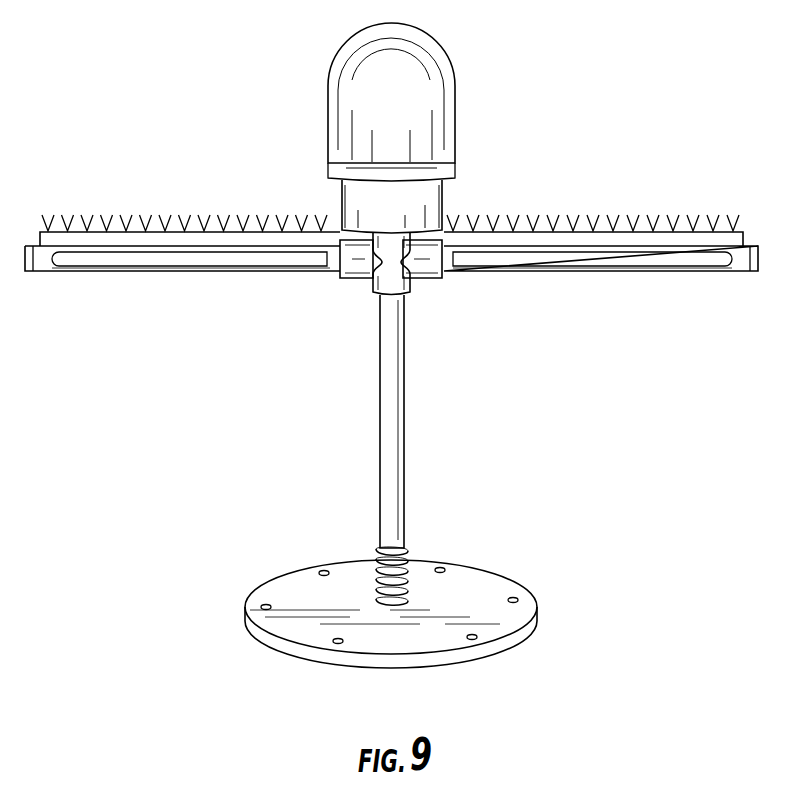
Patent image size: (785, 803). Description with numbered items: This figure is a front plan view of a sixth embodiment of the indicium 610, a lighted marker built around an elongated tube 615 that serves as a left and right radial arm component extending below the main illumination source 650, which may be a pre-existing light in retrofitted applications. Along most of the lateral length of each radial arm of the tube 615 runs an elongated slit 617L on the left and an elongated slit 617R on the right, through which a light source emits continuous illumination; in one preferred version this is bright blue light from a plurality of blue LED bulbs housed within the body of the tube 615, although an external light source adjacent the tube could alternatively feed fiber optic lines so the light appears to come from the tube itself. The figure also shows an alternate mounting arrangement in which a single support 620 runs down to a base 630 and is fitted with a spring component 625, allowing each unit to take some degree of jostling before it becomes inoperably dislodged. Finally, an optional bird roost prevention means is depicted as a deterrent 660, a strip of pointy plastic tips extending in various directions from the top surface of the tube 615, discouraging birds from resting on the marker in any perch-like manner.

The indicium 610 is at (242, 57).
The illumination source 650 is at (342, 192).
The deterrent 660 is at (178, 219).
The elongated tube 615 is at (138, 272).
The elongated slit 617L is at (186, 258).
The elongated slit 617R is at (634, 258).
The support 620 is at (380, 473).
The spring component 625 is at (410, 557).
The base 630 is at (537, 607).